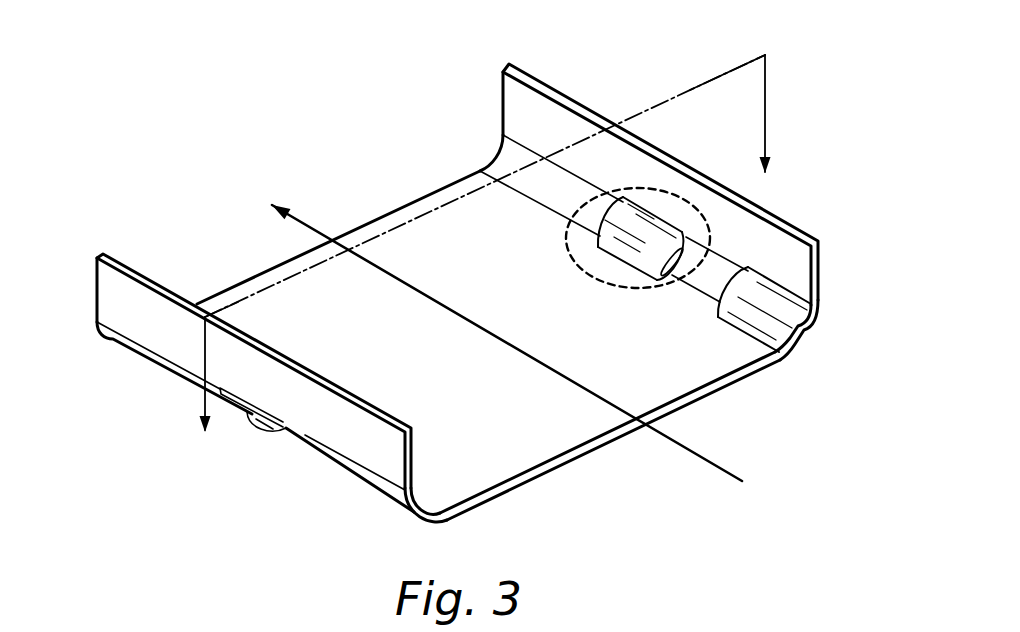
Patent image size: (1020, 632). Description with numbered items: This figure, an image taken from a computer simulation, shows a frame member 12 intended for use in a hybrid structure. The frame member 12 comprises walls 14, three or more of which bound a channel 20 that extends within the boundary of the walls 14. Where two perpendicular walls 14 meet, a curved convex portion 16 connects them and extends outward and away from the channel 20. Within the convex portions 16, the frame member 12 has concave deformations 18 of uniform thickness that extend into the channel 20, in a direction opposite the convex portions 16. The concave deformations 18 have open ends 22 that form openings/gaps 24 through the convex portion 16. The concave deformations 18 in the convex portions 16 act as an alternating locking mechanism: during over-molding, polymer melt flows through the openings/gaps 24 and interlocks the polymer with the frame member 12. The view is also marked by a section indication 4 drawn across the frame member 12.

The frame member 12 is at (600, 62).
The walls 14 is at (535, 109).
The convex portion 16 is at (497, 156).
The concave deformations 18 is at (585, 268).
The channel 20 is at (410, 288).
The open ends 22 is at (683, 258).
The openings/gaps 24 is at (679, 262).
The section line 4- 4 is at (486, 261).